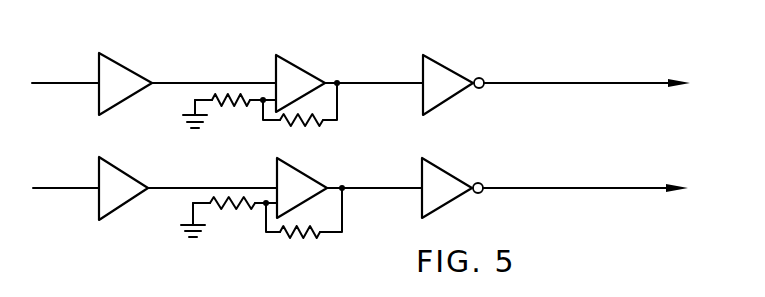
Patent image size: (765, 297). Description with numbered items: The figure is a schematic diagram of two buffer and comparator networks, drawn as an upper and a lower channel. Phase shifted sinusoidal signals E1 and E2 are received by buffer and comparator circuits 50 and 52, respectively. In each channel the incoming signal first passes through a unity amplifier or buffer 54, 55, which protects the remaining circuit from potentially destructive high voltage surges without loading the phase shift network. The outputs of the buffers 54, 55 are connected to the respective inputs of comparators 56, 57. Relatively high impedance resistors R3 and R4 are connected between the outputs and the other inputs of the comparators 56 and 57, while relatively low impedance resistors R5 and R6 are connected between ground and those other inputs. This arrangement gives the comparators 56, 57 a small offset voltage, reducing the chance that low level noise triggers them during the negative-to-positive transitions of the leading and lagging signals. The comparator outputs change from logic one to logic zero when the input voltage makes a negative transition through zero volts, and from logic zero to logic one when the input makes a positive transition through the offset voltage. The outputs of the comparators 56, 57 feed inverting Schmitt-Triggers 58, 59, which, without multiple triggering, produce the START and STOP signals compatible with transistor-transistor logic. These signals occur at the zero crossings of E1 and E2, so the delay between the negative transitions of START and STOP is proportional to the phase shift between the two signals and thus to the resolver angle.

The buffer and comparator circuit 50 is at (203, 48).
The buffer and comparator circuit 52 is at (211, 168).
The unity amplifier or buffer 54 is at (125, 84).
The unity amplifier or buffer 55 is at (123, 188).
The comparator 56 is at (300, 83).
The comparator 57 is at (302, 188).
The inverting Schmitt-Trigger 58 is at (453, 85).
The inverting Schmitt-Trigger 59 is at (452, 188).
The relatively high impedance resistor R3 is at (300, 116).
The relatively high impedance resistor R4 is at (304, 226).
The relatively low impedance resistor R5 is at (229, 113).
The relatively low impedance resistor R6 is at (229, 217).